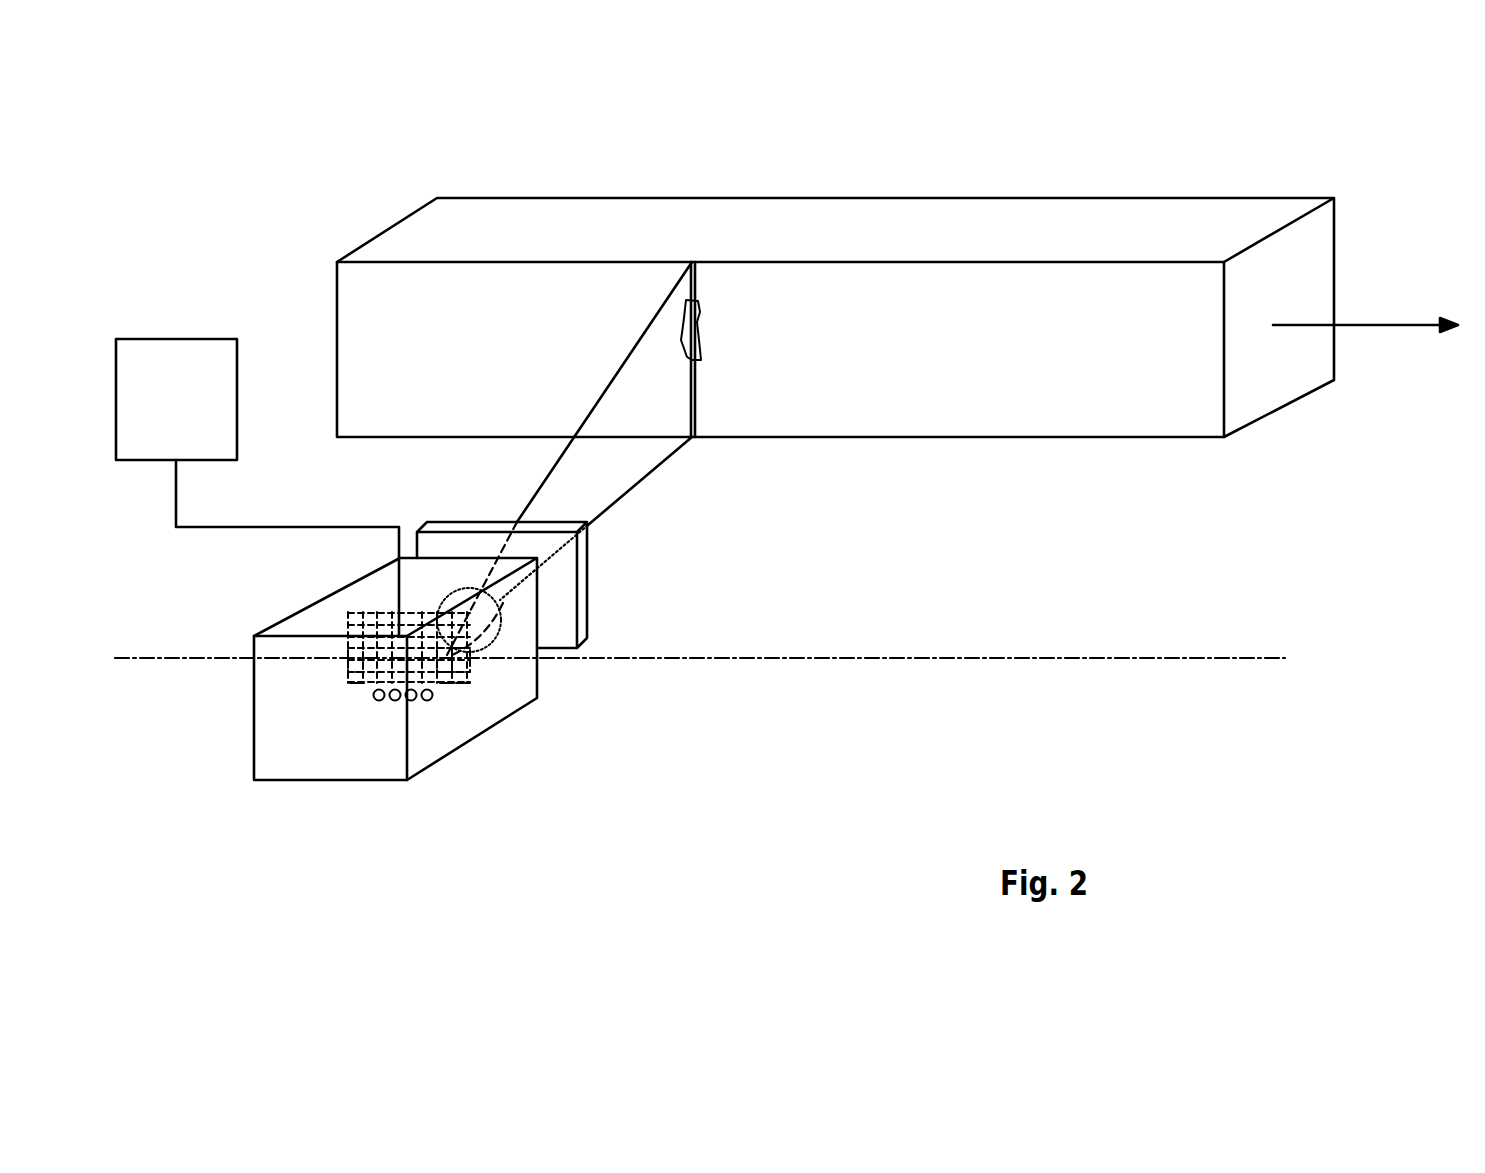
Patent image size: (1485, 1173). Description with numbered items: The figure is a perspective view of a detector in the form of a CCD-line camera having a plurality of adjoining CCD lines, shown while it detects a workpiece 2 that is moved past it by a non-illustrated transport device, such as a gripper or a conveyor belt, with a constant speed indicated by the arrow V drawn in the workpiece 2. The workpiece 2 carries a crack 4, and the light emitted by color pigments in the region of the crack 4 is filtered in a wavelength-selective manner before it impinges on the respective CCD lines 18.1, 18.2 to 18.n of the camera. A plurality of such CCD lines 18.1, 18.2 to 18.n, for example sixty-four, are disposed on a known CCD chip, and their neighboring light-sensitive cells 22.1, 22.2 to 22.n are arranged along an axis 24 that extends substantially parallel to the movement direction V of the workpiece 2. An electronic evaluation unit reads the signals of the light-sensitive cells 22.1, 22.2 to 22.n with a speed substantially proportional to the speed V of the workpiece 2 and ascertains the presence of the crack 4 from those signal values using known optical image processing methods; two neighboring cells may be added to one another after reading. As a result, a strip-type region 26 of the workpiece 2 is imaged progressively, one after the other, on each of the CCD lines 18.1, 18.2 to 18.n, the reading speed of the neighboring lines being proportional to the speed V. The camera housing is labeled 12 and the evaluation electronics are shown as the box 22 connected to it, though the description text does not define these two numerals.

The workpiece 2 is at (902, 225).
The crack 4 is at (700, 320).
The strip-type region 26 is at (695, 390).
The speed V is at (1375, 325).
The sensor module 12 is at (461, 526).
The evaluation unit 22 is at (190, 414).
The light-sensitive cell 22.1 is at (465, 660).
The light-sensitive cell 22.2 is at (443, 660).
The light-sensitive cell 22.n is at (353, 660).
The CCD line 18.1 is at (463, 682).
The CCD line 18.2 is at (447, 682).
The CCD line 18.n is at (357, 682).
The axis 24 is at (960, 658).